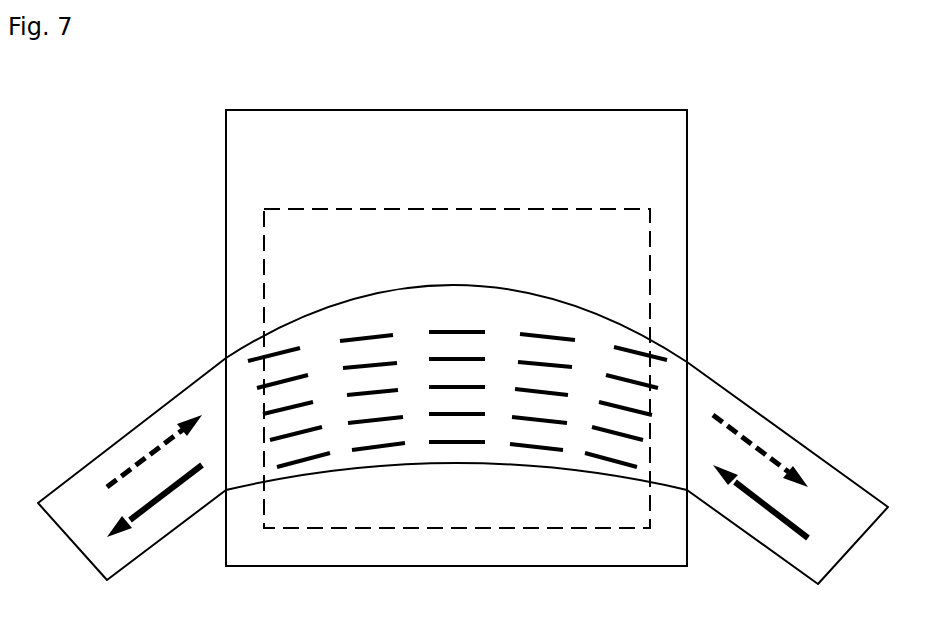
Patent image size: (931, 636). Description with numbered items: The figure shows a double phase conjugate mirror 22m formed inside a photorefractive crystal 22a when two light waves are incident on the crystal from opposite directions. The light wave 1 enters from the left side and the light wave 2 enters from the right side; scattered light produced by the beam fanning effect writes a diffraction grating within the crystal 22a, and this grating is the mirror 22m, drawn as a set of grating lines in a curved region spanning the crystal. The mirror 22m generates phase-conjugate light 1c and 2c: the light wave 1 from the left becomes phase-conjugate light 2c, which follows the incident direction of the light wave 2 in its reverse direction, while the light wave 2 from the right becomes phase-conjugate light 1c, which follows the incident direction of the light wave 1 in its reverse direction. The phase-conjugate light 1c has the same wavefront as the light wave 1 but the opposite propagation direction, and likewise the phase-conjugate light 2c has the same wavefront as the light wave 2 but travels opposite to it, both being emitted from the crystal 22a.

The photorefractive crystal 22a is at (459, 109).
The double phase conjugate mirror 22m is at (448, 208).
The light wave 1 is at (163, 437).
The phase-conjugate light 1c is at (150, 510).
The light wave 2 is at (767, 510).
The phase-conjugate light 2c is at (750, 440).